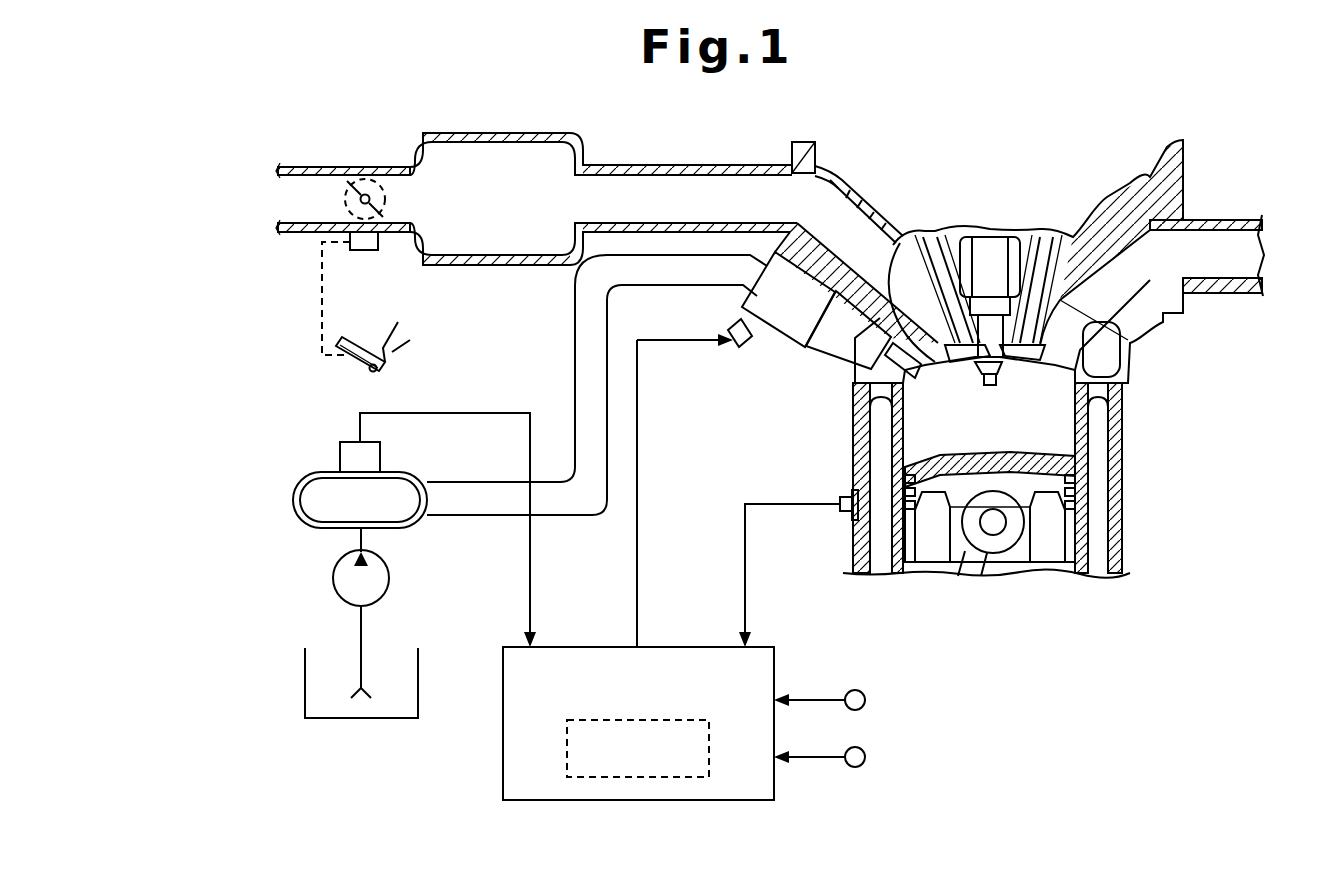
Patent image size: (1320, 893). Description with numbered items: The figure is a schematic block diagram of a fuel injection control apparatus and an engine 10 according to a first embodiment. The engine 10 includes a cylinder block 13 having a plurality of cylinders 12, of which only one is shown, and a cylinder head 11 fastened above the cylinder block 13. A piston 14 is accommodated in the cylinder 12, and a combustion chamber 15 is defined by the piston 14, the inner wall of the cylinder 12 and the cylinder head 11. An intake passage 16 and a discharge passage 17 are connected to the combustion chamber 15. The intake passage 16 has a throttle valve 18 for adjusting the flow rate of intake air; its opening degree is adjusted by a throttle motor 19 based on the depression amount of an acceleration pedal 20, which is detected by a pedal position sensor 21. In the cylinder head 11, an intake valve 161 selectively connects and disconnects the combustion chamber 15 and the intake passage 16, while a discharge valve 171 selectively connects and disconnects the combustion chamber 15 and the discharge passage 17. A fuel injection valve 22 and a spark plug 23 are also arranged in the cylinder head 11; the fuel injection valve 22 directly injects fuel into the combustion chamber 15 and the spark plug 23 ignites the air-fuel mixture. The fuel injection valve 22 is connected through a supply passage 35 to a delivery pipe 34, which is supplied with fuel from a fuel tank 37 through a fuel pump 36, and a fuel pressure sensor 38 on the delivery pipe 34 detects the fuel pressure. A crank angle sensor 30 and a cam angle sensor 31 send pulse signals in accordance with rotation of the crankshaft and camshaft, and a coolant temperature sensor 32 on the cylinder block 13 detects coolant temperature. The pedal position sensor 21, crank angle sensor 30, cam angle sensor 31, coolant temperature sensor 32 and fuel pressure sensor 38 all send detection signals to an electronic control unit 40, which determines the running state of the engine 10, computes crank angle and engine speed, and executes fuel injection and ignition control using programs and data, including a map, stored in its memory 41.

The engine 10 is at (1178, 414).
The cylinder head 11 is at (1150, 320).
The cylinder 12 is at (1065, 573).
The cylinder block 13 is at (1125, 476).
The piston 14 is at (1045, 545).
The combustion chamber 15 is at (955, 435).
The intake passage 16 is at (729, 186).
The intake valve 161 is at (900, 238).
The discharge passage 17 is at (1232, 232).
The discharge valve 171 is at (1083, 240).
The throttle valve 18 is at (357, 182).
The throttle motor 19 is at (386, 186).
The acceleration pedal 20 is at (345, 337).
The pedal position sensor 21 is at (370, 250).
The fuel injection valve 22 is at (792, 320).
The spark plug 23 is at (1002, 383).
The crank angle sensor 30 is at (865, 700).
The cam angle sensor 31 is at (865, 757).
The coolant temperature sensor 32 is at (836, 515).
The delivery pipe 34 is at (293, 498).
The supply passage 35 is at (478, 517).
The fuel pump 36 is at (333, 579).
The fuel tank 37 is at (305, 682).
The fuel pressure sensor 38 is at (340, 457).
The electronic control unit 40 is at (730, 800).
The memory 41 is at (631, 720).